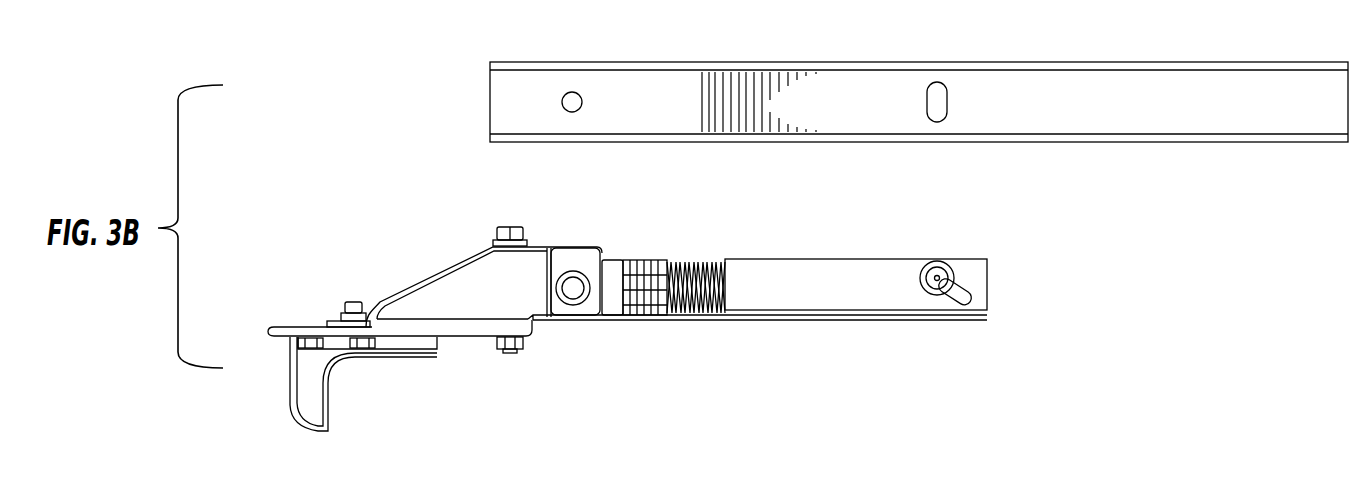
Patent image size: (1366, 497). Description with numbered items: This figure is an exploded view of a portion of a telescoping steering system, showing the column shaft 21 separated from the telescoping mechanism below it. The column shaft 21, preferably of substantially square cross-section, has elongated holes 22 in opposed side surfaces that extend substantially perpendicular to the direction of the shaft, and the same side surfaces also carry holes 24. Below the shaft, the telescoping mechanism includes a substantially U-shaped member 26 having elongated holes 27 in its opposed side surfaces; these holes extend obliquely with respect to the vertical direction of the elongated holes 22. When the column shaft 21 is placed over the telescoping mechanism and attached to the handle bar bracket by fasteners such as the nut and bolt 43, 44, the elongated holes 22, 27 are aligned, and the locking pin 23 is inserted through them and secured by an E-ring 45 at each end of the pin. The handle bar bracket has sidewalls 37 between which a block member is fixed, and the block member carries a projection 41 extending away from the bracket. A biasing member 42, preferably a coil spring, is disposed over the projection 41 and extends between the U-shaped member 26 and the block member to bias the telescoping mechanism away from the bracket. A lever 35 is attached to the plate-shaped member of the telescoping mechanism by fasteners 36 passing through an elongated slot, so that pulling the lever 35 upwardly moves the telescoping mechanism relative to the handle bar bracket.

The column shaft 21 is at (1040, 115).
The elongated holes 22 is at (940, 93).
The locking pin 23 is at (941, 275).
The holes 24 is at (574, 93).
The substantially U-shaped member 26 is at (797, 290).
The elongated holes 27 is at (960, 301).
The lever 35 is at (322, 382).
The fasteners 36 is at (352, 301).
The sidewalls 37 is at (448, 298).
The projection 41 is at (630, 319).
The biasing member 42 is at (688, 319).
The fastener 43 is at (515, 353).
The fastener 44 is at (513, 225).
The E-ring 45 is at (938, 261).